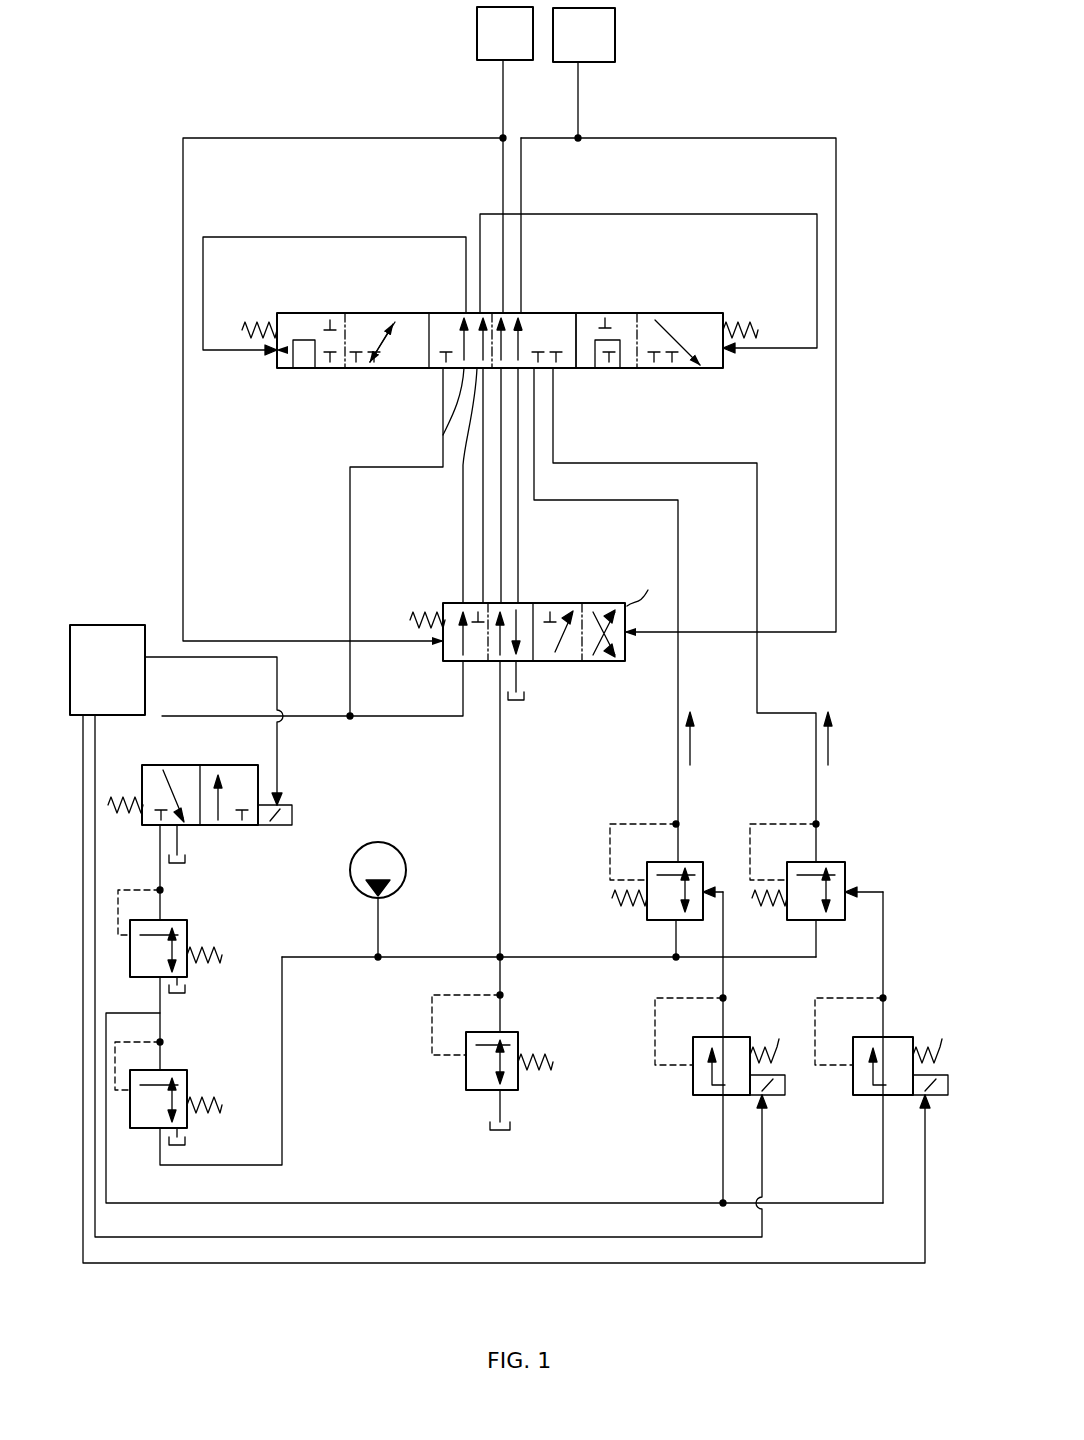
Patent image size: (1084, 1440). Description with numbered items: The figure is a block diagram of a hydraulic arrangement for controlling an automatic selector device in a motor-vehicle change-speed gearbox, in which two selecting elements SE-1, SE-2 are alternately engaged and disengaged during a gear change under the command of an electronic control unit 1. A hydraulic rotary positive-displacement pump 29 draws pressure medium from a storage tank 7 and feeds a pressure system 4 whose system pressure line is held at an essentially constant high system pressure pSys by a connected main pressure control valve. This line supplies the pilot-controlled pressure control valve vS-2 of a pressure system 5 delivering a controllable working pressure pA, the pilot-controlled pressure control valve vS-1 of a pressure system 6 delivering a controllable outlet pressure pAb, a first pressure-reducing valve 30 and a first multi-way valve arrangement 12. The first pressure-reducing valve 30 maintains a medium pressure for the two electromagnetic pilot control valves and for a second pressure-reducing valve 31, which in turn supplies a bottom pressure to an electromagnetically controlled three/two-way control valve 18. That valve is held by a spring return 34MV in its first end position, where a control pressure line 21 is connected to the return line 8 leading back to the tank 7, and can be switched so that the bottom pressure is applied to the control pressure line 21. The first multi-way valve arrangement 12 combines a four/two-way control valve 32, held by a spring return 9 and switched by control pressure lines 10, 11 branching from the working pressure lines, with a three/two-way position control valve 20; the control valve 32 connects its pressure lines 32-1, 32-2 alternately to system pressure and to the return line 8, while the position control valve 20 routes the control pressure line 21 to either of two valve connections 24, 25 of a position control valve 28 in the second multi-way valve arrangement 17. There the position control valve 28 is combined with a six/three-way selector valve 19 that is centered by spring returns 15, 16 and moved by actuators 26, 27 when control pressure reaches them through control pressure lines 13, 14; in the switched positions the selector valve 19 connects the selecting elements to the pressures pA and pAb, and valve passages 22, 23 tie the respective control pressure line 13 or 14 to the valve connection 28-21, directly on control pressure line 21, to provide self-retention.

The electronic control unit 1 is at (107, 670).
The pressure system 4 is at (420, 1068).
The pressure system 5 is at (838, 1140).
The pressure system 6 is at (655, 1102).
The storage tank 7 is at (518, 704).
The return line 8 is at (522, 684).
The spring return 9 is at (412, 618).
The control pressure line 10 is at (183, 448).
The control pressure line 11 is at (836, 400).
The first multi-way valve arrangement 12 is at (605, 590).
The control pressure line 13 is at (288, 226).
The control pressure line 14 is at (615, 206).
The spring return 15 is at (250, 325).
The spring return 16 is at (752, 325).
The second multi-way valve arrangement 17 is at (500, 295).
The electromagnetically controlled 3/2-way control valve 18 is at (272, 800).
The 6/3-way selector valve 19 is at (563, 313).
The 3/2-way position control valve 20 is at (460, 603).
The control pressure line 21 is at (250, 712).
The valve passage 22 is at (304, 340).
The valve passage 23 is at (600, 330).
The valve connection 24 is at (450, 400).
The valve connection 25 is at (462, 420).
The actuator 26 is at (272, 356).
The actuator 27 is at (728, 370).
The position control valve 28 is at (440, 313).
The valve connection 28-21 is at (443, 372).
The hydraulic rotary positive-displacement pump 29 is at (378, 901).
The first pressure-reducing valve 30 is at (195, 1080).
The second pressure-reducing valve 31 is at (200, 935).
The 4/2-way control valve 32 is at (498, 663).
The pressure line 32-1 is at (520, 540).
The pressure line 32-2 is at (534, 516).
The spring return 34MV is at (118, 800).
The selecting element SE-1 is at (505, 160).
The selecting element SE-2 is at (584, 74).
The system pressure pSys is at (549, 941).
The controllable outlet pressure pAb is at (703, 757).
The controllable working pressure pA is at (840, 755).
The pilot-controlled pressure control valve vS-1 is at (671, 892).
The pilot-controlled pressure control valve vS-2 is at (823, 890).